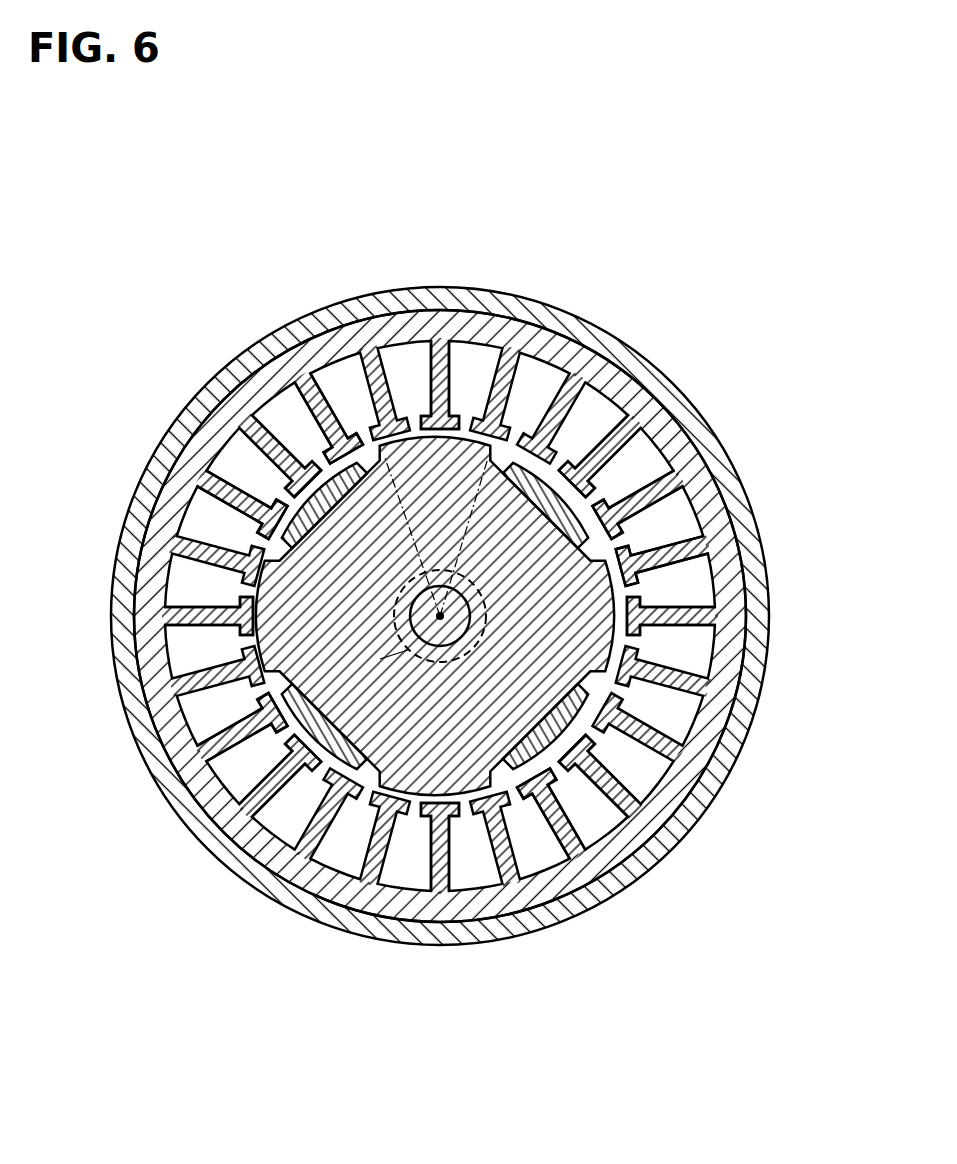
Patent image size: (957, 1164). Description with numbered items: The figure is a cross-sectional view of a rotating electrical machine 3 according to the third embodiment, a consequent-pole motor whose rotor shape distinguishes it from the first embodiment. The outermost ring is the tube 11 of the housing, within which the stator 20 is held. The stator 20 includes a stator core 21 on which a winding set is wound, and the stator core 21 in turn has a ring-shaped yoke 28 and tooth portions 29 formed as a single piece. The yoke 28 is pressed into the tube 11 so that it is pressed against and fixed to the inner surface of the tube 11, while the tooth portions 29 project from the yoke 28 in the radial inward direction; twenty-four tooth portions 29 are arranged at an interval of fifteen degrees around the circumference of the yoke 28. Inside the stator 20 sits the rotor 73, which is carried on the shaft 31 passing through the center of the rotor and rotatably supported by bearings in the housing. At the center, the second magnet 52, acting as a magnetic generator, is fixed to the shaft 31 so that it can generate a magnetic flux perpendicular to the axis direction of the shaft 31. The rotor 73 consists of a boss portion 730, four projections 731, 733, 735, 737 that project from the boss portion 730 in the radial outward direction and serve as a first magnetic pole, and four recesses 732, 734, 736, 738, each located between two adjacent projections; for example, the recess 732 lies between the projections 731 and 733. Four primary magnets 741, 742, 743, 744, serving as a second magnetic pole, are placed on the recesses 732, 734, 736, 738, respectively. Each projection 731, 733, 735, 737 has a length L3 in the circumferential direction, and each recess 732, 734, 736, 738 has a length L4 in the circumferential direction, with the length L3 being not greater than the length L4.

The rotating electrical machine 3 is at (330, 195).
The tube 11 is at (625, 358).
The stator 20 is at (472, 569).
The stator core 21 is at (440, 569).
The yoke 28 is at (292, 365).
The tooth portions 29 is at (352, 372).
The shaft 31 is at (470, 608).
The second magnet 52 is at (483, 645).
The rotor 73 is at (440, 616).
The boss portion 730 is at (312, 374).
The projection 731 is at (461, 440).
The recess 732 is at (670, 473).
The projection 733 is at (612, 647).
The recess 734 is at (598, 800).
The projection 735 is at (385, 880).
The recess 736 is at (270, 757).
The projection 737 is at (282, 637).
The recess 738 is at (232, 480).
The primary magnet 741 is at (623, 400).
The primary magnet 742 is at (612, 845).
The primary magnet 743 is at (283, 797).
The primary magnet 744 is at (298, 465).
The length of projection L3 is at (468, 438).
The length of recess L4 is at (606, 442).